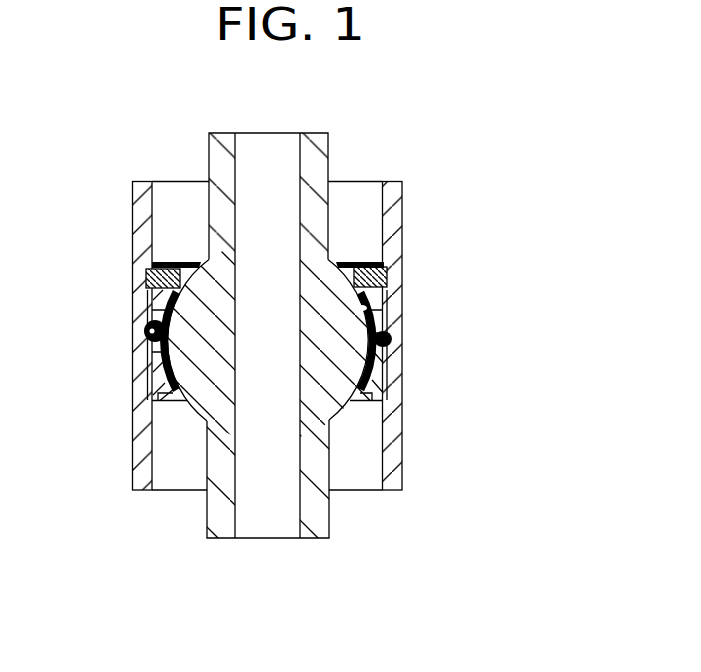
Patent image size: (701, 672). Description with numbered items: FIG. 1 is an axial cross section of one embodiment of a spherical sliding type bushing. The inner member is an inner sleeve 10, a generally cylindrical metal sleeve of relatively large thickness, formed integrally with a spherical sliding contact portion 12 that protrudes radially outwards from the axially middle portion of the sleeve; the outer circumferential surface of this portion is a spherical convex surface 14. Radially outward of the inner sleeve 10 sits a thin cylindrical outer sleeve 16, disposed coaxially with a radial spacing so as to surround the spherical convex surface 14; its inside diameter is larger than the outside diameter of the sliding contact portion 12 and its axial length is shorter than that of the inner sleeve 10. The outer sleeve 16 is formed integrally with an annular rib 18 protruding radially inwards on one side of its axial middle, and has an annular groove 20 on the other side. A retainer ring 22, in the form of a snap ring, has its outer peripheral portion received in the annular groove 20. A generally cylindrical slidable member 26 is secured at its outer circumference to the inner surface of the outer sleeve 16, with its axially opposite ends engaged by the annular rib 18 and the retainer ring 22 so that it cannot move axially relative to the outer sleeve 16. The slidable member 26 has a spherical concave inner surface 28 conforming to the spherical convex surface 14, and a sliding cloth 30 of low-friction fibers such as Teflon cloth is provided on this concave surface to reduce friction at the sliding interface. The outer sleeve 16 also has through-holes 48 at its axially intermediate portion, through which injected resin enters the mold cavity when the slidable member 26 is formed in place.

The inner sleeve 10 is at (354, 138).
The spherical sliding contact portion 12 is at (212, 363).
The spherical convex surface 14 is at (262, 335).
The outer sleeve 16 is at (416, 205).
The annular rib 18 is at (160, 402).
The annular groove 20 is at (388, 274).
The retainer ring 22 is at (147, 277).
The slidable member 26 is at (380, 360).
The spherical concave inner surface 28 is at (383, 309).
The sliding cloth 30 is at (150, 361).
The through-holes 48 is at (147, 335).